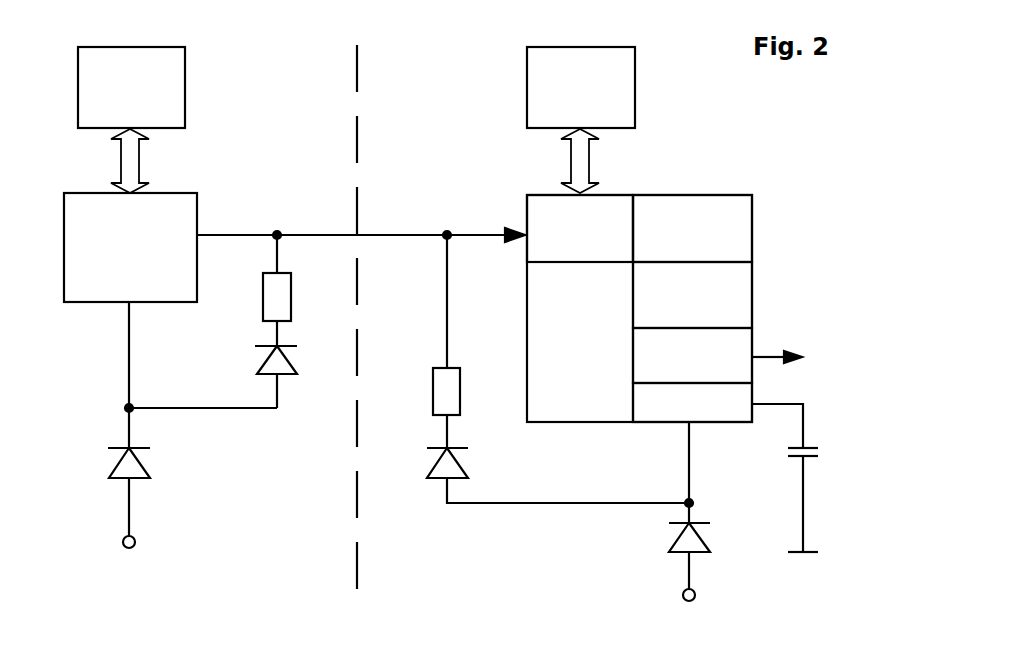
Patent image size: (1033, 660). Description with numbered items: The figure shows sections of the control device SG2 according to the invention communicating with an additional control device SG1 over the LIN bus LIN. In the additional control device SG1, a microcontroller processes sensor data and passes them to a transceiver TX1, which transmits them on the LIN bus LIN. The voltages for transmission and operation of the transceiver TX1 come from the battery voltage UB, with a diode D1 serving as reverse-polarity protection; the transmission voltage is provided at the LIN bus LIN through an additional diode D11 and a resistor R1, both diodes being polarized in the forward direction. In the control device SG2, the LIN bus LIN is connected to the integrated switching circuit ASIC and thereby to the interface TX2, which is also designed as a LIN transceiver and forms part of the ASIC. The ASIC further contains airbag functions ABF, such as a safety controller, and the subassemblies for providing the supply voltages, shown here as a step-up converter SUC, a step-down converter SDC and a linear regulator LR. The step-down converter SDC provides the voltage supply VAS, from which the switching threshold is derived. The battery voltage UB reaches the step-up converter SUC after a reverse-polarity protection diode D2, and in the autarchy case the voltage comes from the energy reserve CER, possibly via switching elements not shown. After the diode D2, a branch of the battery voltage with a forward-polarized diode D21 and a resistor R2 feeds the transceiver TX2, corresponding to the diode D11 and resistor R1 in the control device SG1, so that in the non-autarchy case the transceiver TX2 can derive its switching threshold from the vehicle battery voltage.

The transceiver TX1 is at (192, 218).
The LIN bus LIN is at (404, 235).
The resistor R1 is at (270, 302).
The additional diode D11 is at (262, 364).
The diode D1 is at (146, 470).
The battery voltage UB is at (428, 573).
The additional control device SG1 is at (96, 586).
The interface (transceiver) TX2 is at (532, 212).
The integrated switching circuit ASIC is at (641, 293).
The airbag functions ABF is at (738, 207).
The linear regulator LR is at (738, 275).
The step-down converter SDC is at (737, 343).
The voltage supply VAS is at (802, 355).
The step-up converter SUC is at (727, 412).
The energy reserve CER is at (804, 478).
The resistor R2 is at (440, 390).
The diode D21 is at (456, 458).
The reverse-polarity protection diode D2 is at (705, 540).
The control device SG2 is at (482, 587).